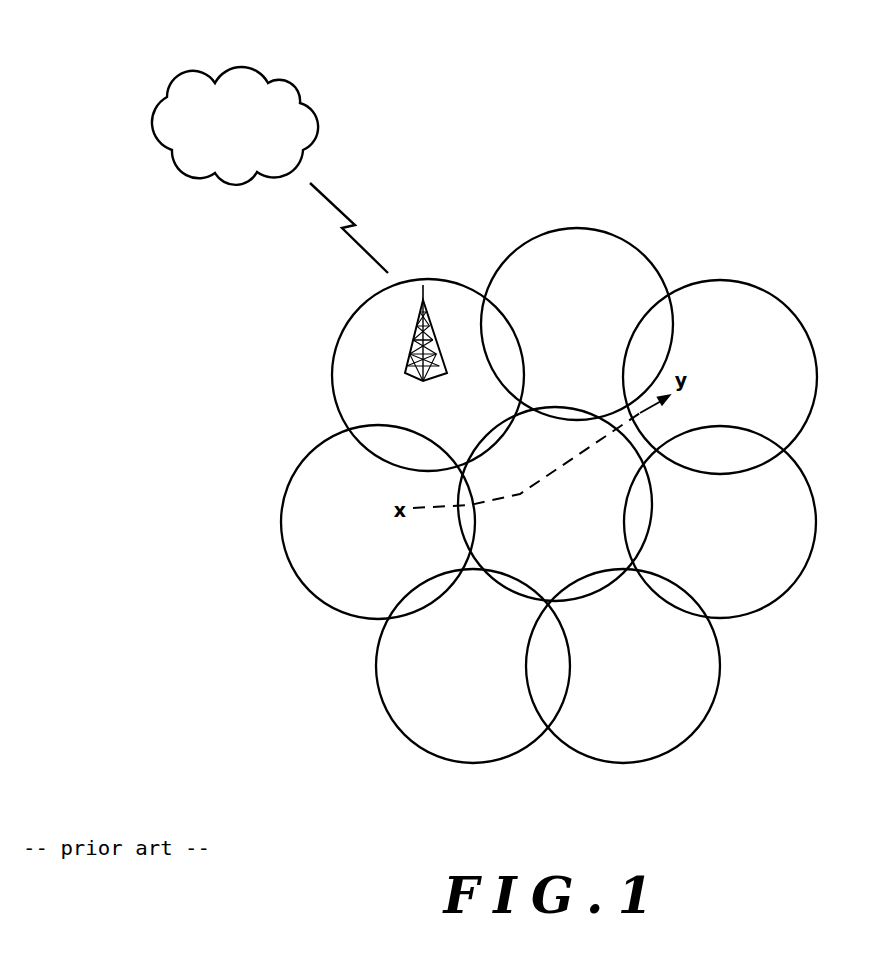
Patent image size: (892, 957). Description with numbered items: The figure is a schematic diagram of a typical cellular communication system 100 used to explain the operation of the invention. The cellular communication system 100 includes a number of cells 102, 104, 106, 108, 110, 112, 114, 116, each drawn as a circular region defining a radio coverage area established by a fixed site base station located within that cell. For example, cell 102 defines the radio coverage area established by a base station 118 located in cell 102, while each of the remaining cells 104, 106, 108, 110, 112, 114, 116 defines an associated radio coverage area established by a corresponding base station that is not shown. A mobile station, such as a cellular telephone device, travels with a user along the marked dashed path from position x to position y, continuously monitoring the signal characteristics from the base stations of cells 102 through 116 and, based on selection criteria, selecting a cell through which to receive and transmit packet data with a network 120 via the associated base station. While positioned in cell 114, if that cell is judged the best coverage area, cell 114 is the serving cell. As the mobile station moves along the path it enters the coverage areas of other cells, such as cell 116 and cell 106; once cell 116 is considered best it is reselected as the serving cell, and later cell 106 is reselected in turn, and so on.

The cellular communication system 100 is at (619, 180).
The cell 102 is at (453, 479).
The cell 104 is at (602, 373).
The cell 106 is at (745, 417).
The cell 108 is at (743, 568).
The cell 110 is at (606, 712).
The cell 112 is at (454, 712).
The cell 114 is at (401, 565).
The cell 116 is at (538, 550).
The base station 118 is at (412, 348).
The network 120 is at (292, 85).